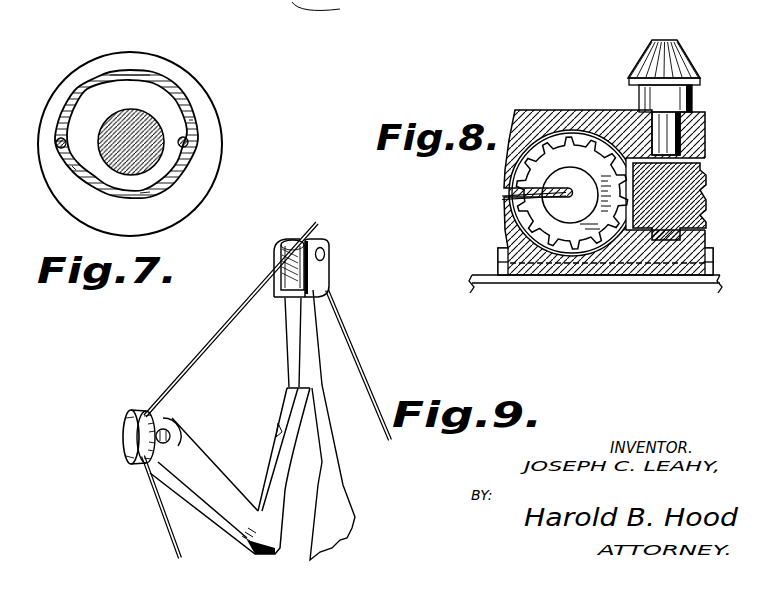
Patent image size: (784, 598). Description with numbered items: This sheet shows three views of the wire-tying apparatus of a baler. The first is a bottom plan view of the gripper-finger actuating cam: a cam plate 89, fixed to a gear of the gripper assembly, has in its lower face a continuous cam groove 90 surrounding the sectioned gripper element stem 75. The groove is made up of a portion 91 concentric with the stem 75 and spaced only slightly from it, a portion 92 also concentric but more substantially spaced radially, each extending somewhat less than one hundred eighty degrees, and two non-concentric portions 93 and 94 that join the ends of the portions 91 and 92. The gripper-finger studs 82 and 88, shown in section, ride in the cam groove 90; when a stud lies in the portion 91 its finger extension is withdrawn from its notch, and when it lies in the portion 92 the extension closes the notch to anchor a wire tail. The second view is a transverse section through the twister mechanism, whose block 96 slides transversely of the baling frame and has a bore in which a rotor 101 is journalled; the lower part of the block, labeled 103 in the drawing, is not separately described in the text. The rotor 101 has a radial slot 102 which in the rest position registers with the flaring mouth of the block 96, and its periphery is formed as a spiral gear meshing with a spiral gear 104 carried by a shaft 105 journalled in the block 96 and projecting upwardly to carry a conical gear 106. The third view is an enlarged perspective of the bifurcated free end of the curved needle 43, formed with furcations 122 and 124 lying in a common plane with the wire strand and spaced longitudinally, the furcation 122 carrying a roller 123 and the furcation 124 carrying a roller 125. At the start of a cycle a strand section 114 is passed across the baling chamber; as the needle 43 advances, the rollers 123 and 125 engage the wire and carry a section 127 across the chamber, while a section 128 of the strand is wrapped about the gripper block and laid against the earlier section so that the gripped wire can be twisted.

In FIG. 7, the stem 75 is at (117, 122).
In FIG. 7, the stud 82 is at (58, 139).
In FIG. 7, the stud 88 is at (188, 144).
In FIG. 7, the cam plate 89 is at (219, 107).
In FIG. 7, the cam groove 90 is at (158, 66).
In FIG. 7, the cam groove portion 91 is at (153, 192).
In FIG. 7, the cam groove portion 92 is at (125, 70).
In FIG. 7, the non-concentric cam groove portion 93 is at (194, 130).
In FIG. 7, the non-concentric cam groove portion 94 is at (71, 167).
In FIG. 8, the block 96 is at (539, 112).
In FIG. 8, the rotor 101 is at (573, 148).
In FIG. 8, the radial slot 102 is at (504, 196).
In FIG. 8, the base 103 is at (574, 250).
In FIG. 8, the spiral gear 104 is at (690, 190).
In FIG. 8, the shaft 105 is at (683, 130).
In FIG. 8, the conical gear 106 is at (696, 66).
In FIG. 9, the needle 43 is at (335, 518).
In FIG. 9, the wire strand section 114 is at (166, 528).
In FIG. 9, the furcation 122 is at (286, 334).
In FIG. 9, the roller 123 is at (314, 234).
In FIG. 9, the furcation 124 is at (203, 481).
In FIG. 9, the roller 125 is at (138, 419).
In FIG. 9, the wire section 127 is at (350, 330).
In FIG. 9, the wire section 128 is at (218, 332).